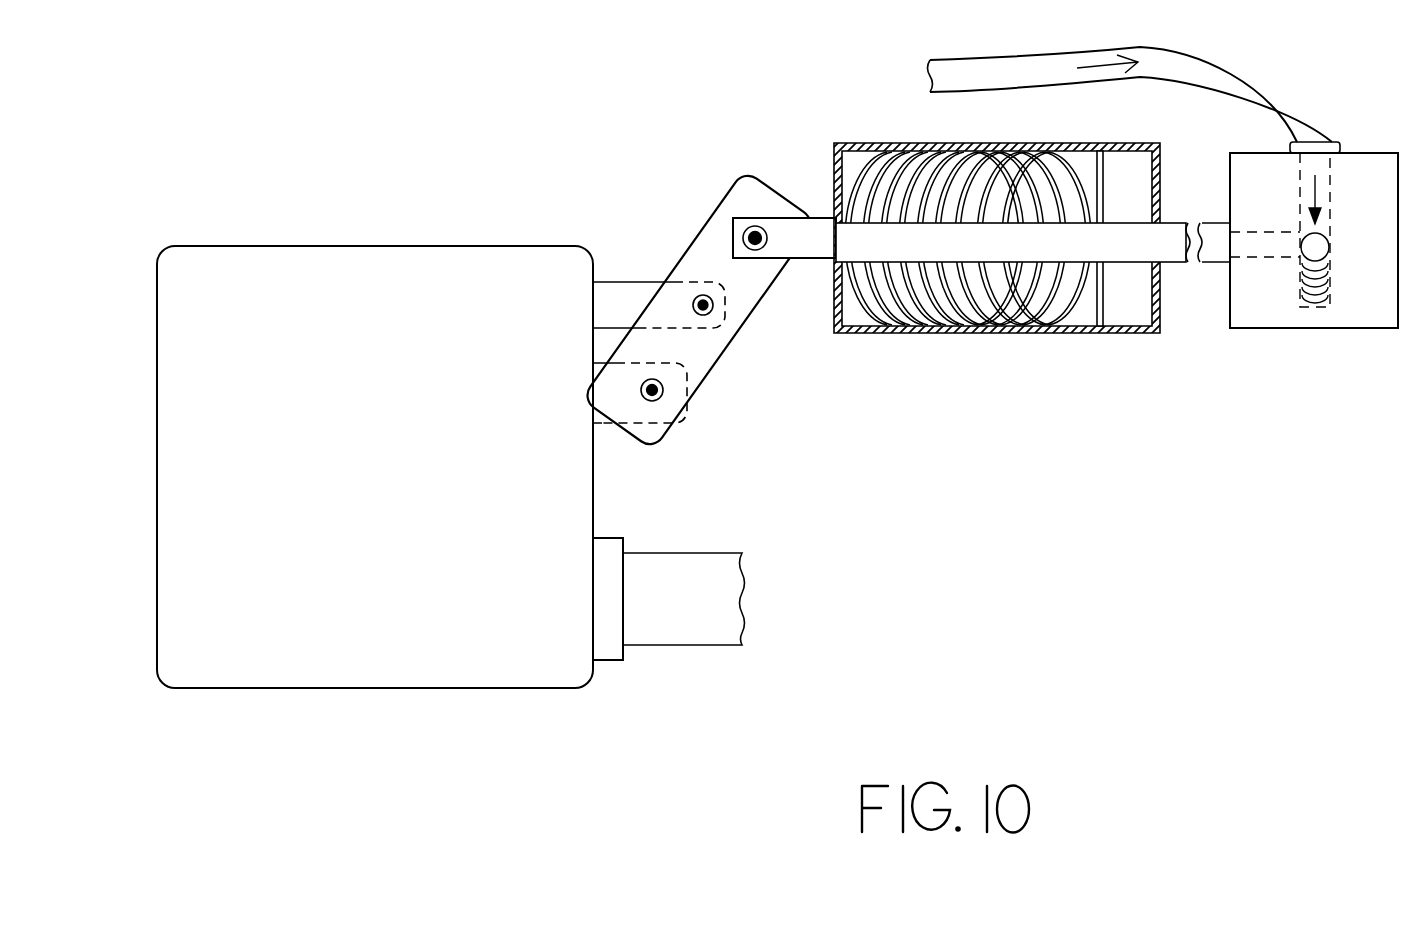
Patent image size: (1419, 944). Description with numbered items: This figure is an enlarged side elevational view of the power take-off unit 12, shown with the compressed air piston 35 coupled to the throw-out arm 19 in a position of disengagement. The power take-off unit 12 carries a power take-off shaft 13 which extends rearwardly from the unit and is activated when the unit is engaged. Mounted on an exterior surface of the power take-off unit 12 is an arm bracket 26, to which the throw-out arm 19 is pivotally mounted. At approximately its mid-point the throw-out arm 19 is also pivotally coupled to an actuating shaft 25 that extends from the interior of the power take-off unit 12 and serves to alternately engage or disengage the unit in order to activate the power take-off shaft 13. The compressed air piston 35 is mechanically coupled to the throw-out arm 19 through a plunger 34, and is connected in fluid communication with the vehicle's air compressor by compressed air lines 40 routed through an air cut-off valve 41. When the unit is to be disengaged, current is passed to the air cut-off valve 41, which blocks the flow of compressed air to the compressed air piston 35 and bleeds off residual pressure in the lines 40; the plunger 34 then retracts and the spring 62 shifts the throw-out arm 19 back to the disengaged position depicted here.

The power take-off unit 12 is at (142, 453).
The power take-off shaft 13 is at (680, 632).
The throw-out arm 19 is at (718, 375).
The actuating shaft 25 is at (623, 293).
The arm bracket 26 is at (665, 413).
The plunger 34 is at (813, 262).
The compressed air piston 35 is at (1107, 374).
The compressed air lines 40 is at (1273, 85).
The air cut-off valve 41 is at (1325, 328).
The spring 62 is at (983, 297).